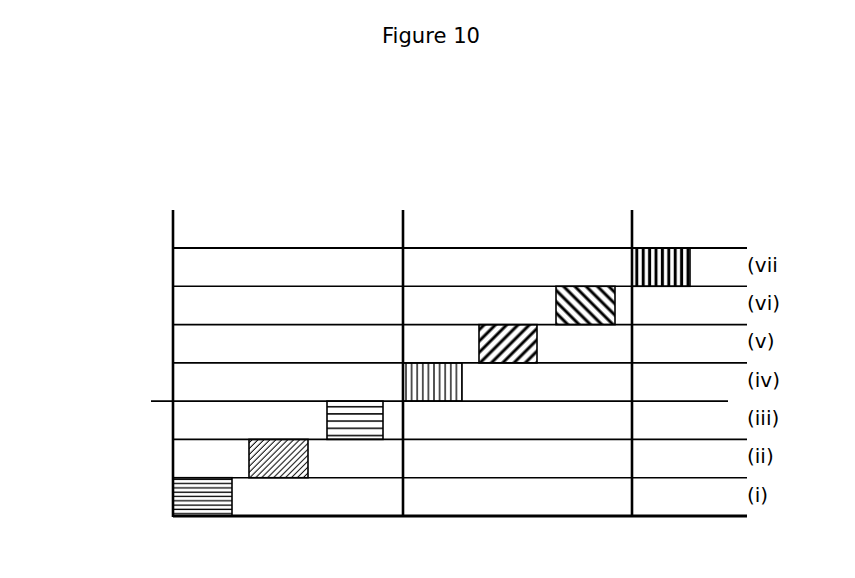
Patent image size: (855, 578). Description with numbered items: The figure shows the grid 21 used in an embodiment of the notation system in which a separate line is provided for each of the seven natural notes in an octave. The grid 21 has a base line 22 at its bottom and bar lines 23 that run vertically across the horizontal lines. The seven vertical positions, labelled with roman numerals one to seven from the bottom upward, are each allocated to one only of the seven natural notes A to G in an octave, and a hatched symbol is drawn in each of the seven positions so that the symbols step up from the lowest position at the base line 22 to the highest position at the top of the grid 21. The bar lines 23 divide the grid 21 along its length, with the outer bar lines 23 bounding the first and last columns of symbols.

The grid 21 is at (288, 218).
The base line 22 is at (343, 516).
The bar lines 23 is at (173, 248).